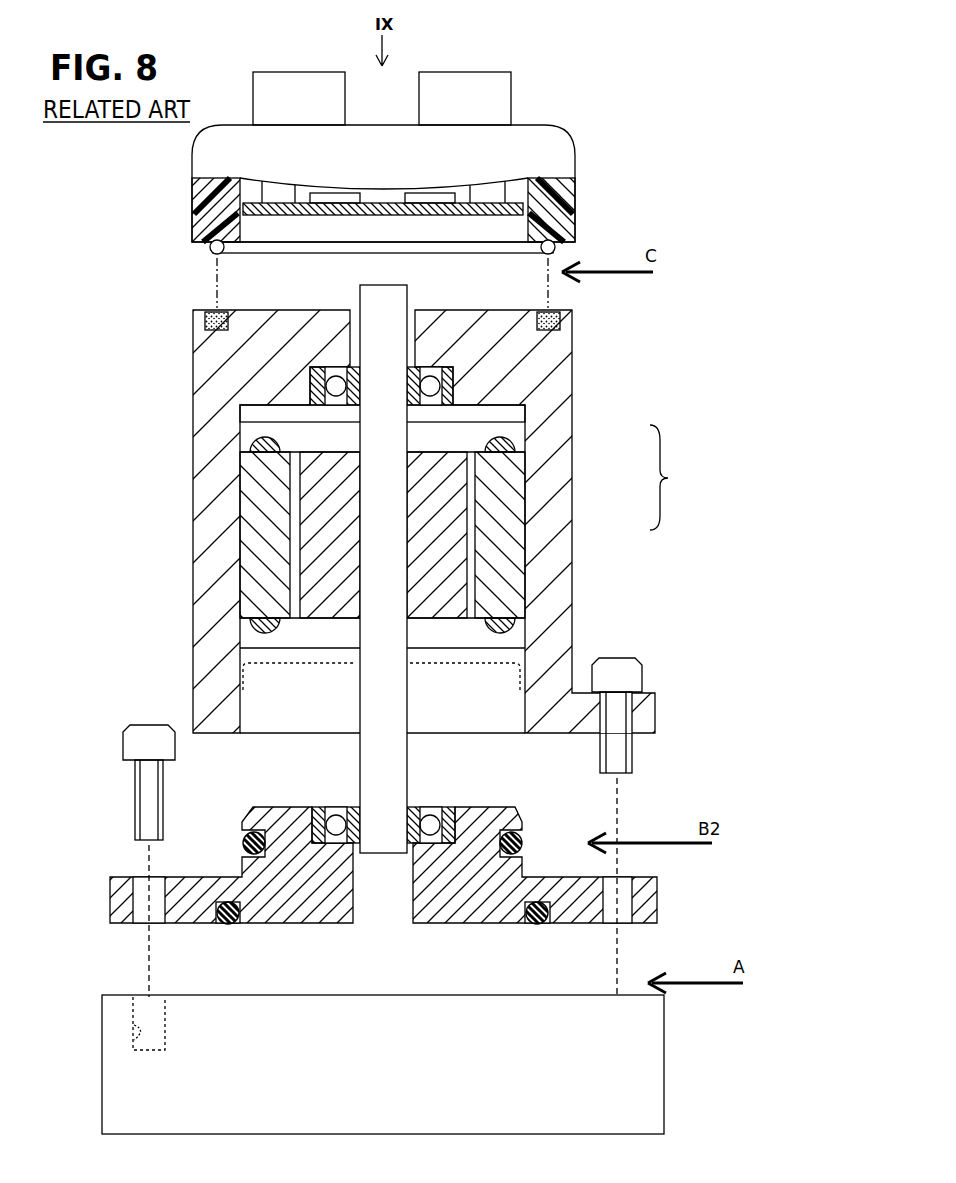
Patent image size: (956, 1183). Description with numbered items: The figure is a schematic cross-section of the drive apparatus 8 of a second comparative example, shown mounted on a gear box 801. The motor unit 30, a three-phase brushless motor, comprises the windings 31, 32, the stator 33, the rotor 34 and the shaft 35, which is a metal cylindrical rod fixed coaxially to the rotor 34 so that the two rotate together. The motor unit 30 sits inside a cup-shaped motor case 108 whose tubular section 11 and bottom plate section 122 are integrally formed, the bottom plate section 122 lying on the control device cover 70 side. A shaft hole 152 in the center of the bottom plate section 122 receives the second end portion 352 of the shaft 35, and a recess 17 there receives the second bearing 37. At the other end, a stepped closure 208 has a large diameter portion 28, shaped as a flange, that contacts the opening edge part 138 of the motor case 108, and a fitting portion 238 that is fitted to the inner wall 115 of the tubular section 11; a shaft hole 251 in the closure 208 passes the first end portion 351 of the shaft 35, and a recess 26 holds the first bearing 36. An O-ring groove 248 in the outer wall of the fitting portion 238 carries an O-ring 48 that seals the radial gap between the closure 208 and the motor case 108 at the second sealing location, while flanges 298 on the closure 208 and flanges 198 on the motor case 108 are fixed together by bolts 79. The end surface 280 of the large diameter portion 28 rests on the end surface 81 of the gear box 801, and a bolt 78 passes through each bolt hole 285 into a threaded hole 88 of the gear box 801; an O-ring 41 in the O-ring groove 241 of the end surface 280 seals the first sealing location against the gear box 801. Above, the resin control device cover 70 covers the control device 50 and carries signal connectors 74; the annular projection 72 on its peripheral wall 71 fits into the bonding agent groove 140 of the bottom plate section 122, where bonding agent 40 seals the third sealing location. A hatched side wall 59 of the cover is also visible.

The drive apparatus 8 is at (556, 70).
The tubular section 11 is at (208, 541).
The recess 17 is at (315, 380).
The recess 26 is at (335, 842).
The large diameter portion 28 is at (118, 897).
The motor unit 30 is at (464, 526).
The winding 31 is at (444, 536).
The winding 32 is at (508, 434).
The stator 33 is at (525, 463).
The rotor 34 is at (442, 492).
The shaft 35 is at (395, 520).
The first bearing 36 is at (448, 807).
The second bearing 37 is at (565, 375).
The bonding agent 40 is at (546, 312).
The O-ring 41 is at (539, 926).
The O-ring 48 is at (524, 840).
The control device 50 is at (381, 190).
The cover side wall 59 is at (553, 210).
The control device cover 70 is at (578, 128).
The peripheral wall 71 is at (203, 210).
The annular projection 72 is at (210, 252).
The signal connector 74 is at (273, 85).
The bolt 78 is at (138, 740).
The bolt 79 is at (619, 665).
The end surface 81 is at (590, 993).
The threaded hole 88 is at (133, 1043).
The motor case 108 is at (555, 402).
The inner wall 115 is at (245, 680).
The bottom plate section 122 is at (260, 382).
The opening edge part 138 is at (224, 745).
The bonding agent groove 140 is at (210, 312).
The shaft hole 152 is at (353, 330).
The flange 198 is at (645, 712).
The closure 208 is at (440, 900).
The fitting portion 238 is at (286, 822).
The O-ring groove 241 is at (228, 926).
The O-ring groove 248 is at (243, 843).
The shaft hole 251 is at (365, 932).
The end surface 280 is at (495, 926).
The bolt hole 285 is at (140, 930).
The flange 298 is at (650, 905).
The first end portion 351 is at (387, 856).
The second end portion 352 is at (395, 298).
The gear box 801 is at (645, 1100).